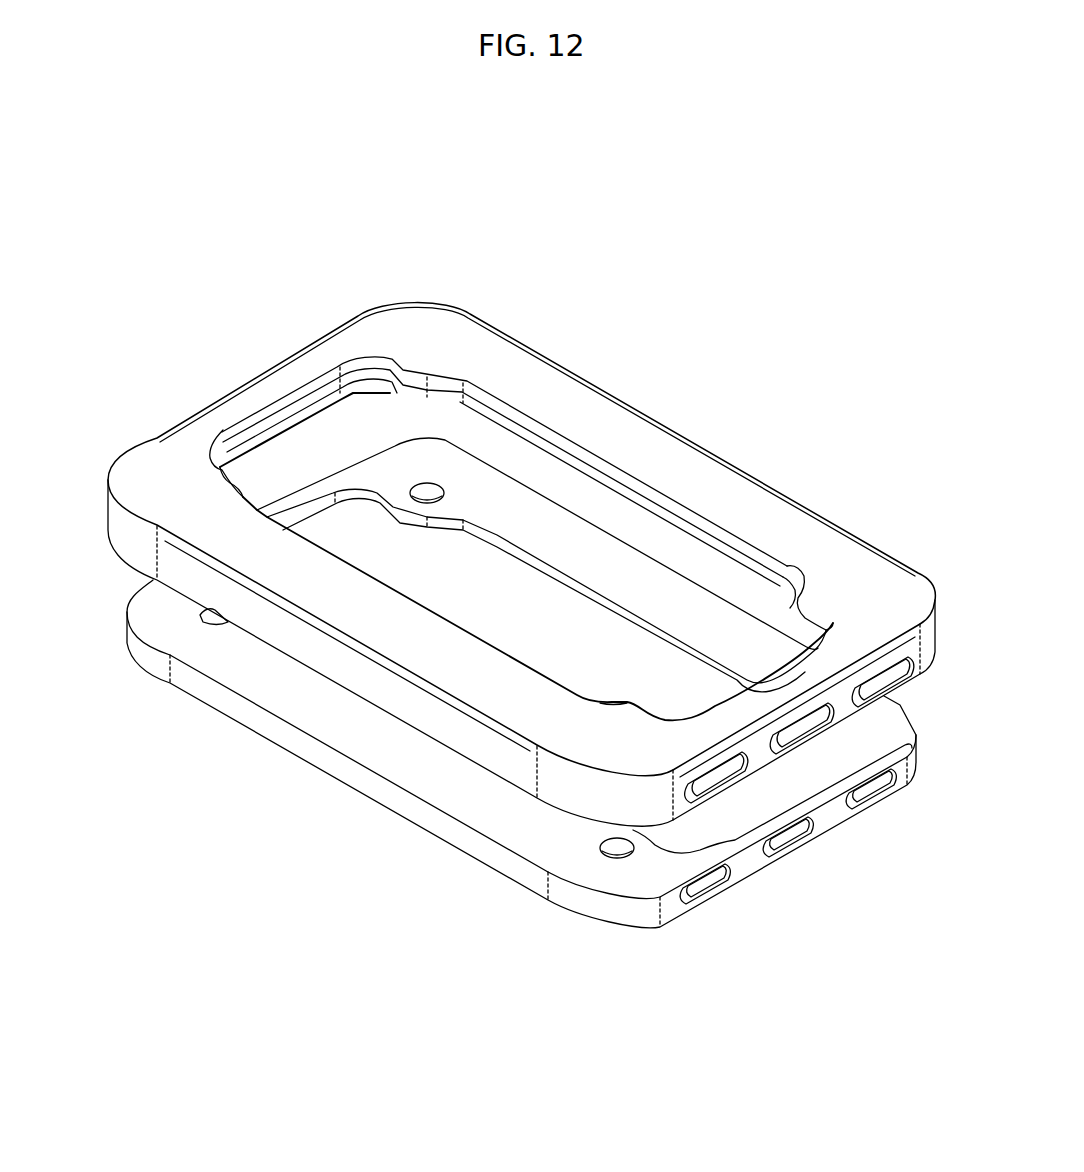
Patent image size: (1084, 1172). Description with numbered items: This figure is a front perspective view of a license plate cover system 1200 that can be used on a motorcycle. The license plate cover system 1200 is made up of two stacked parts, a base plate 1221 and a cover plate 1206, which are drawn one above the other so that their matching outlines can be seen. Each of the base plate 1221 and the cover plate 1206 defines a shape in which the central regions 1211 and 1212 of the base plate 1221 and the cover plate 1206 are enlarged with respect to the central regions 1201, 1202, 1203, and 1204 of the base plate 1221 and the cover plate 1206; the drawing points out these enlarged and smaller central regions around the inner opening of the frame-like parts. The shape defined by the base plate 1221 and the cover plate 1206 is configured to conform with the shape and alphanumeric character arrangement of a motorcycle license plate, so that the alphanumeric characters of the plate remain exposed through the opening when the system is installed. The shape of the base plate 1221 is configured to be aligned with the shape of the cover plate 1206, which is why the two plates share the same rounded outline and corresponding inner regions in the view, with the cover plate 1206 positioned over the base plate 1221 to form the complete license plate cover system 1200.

The license plate cover system 1200 is at (197, 200).
The central region 1201 is at (423, 420).
The central region 1202 is at (784, 624).
The central region 1203 is at (614, 716).
The central region 1204 is at (213, 490).
The cover plate 1206 is at (150, 398).
The central region 1211 is at (596, 504).
The central region 1212 is at (373, 725).
The base plate 1221 is at (235, 733).